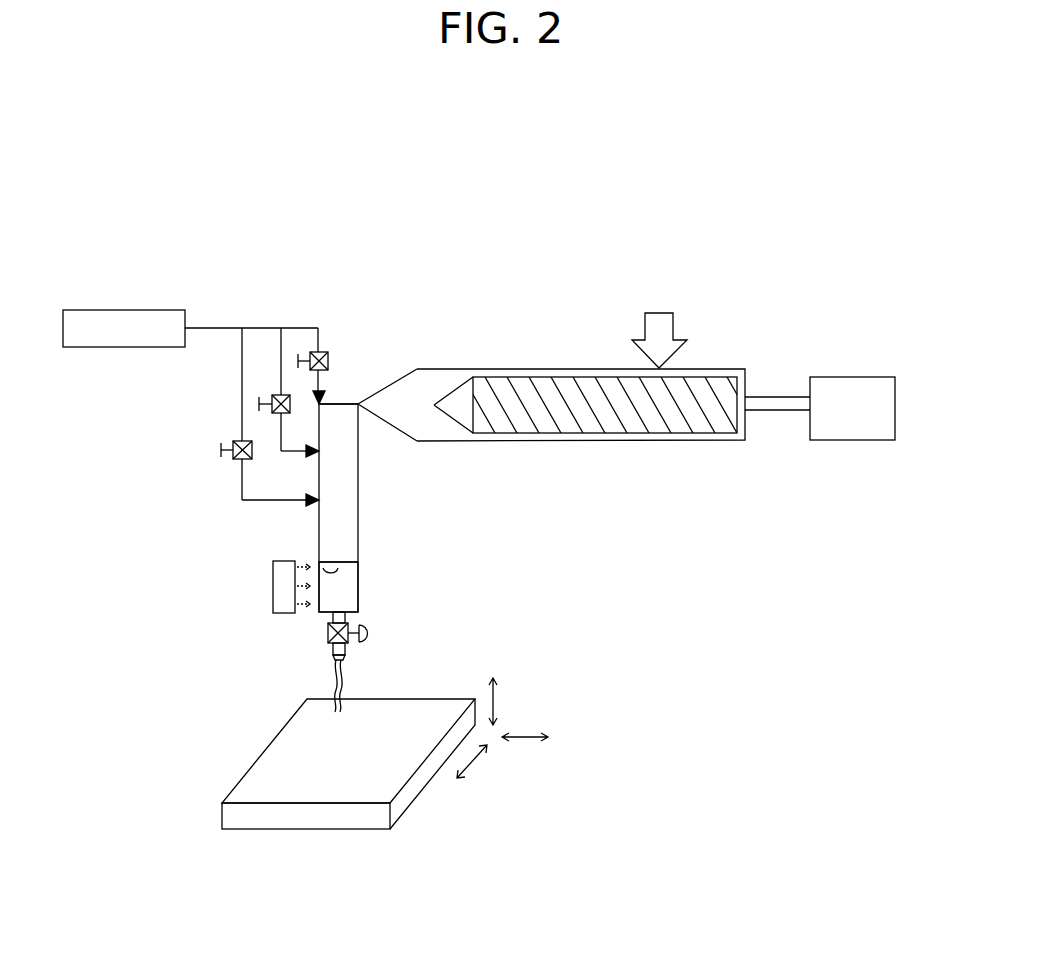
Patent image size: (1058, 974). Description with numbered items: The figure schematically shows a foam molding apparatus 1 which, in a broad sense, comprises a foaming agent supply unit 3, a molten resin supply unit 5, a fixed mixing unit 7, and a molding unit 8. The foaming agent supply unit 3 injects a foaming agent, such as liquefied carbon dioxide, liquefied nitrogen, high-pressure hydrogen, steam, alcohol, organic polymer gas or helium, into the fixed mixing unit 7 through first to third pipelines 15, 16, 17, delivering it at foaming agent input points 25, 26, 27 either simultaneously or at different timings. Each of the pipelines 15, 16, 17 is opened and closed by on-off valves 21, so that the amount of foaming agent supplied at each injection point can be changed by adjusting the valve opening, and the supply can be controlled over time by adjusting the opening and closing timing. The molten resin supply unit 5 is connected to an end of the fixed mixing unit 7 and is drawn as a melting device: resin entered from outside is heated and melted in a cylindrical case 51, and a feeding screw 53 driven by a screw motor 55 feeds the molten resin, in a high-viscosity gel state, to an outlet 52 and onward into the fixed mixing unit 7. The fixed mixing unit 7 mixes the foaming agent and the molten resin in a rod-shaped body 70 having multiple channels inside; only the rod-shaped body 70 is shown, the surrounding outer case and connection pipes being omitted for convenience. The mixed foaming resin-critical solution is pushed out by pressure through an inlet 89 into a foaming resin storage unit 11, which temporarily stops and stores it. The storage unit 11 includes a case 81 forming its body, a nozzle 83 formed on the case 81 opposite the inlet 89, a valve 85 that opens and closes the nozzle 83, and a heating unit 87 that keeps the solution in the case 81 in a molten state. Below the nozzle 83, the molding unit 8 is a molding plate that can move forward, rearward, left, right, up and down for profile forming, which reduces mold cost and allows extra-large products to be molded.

The foam molding apparatus 1 is at (769, 203).
The foaming agent supply unit 3 is at (128, 308).
The molten resin supply unit 5 is at (825, 312).
The fixed mixing unit 7 is at (367, 448).
The molding unit 8 is at (300, 741).
The foaming resin storage unit 11 is at (303, 638).
The first pipeline 15 is at (303, 328).
The second pipeline 16 is at (281, 353).
The third pipeline 17 is at (242, 367).
The on-off valves 21 is at (297, 363).
The foaming agent input point 25 is at (323, 401).
The foaming agent input point 26 is at (317, 457).
The foaming agent input point 27 is at (317, 503).
The cylindrical case 51 is at (513, 368).
The outlet 52 is at (358, 403).
The feeding screw 53 is at (702, 397).
The screw motor 55 is at (860, 395).
The rod-shaped body 70 is at (354, 485).
The case 81 is at (359, 580).
The nozzle 83 is at (347, 653).
The valve 85 is at (372, 633).
The heating unit 87 is at (283, 586).
The inlet 89 is at (340, 563).